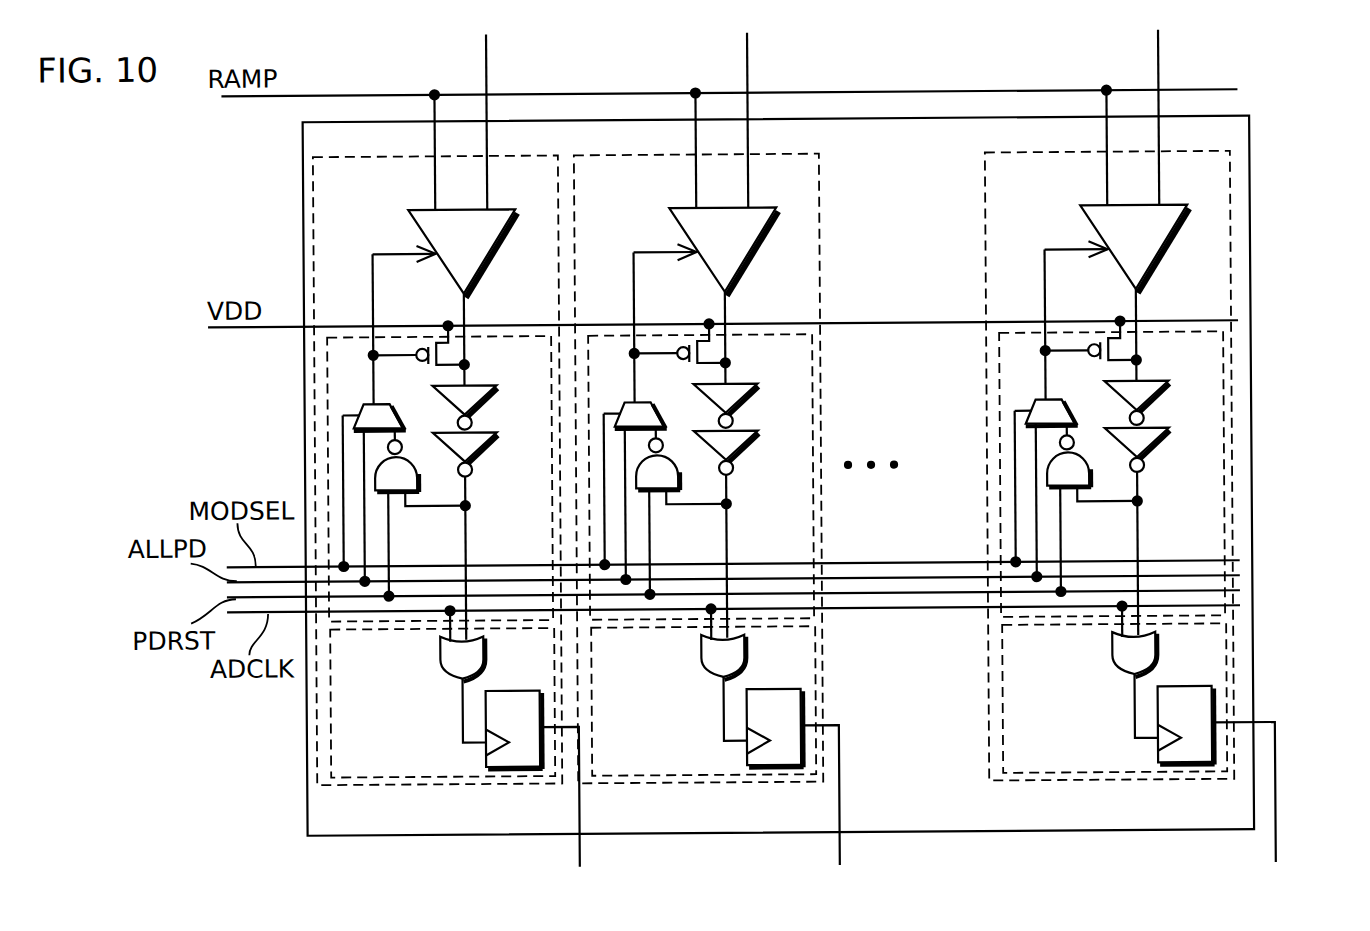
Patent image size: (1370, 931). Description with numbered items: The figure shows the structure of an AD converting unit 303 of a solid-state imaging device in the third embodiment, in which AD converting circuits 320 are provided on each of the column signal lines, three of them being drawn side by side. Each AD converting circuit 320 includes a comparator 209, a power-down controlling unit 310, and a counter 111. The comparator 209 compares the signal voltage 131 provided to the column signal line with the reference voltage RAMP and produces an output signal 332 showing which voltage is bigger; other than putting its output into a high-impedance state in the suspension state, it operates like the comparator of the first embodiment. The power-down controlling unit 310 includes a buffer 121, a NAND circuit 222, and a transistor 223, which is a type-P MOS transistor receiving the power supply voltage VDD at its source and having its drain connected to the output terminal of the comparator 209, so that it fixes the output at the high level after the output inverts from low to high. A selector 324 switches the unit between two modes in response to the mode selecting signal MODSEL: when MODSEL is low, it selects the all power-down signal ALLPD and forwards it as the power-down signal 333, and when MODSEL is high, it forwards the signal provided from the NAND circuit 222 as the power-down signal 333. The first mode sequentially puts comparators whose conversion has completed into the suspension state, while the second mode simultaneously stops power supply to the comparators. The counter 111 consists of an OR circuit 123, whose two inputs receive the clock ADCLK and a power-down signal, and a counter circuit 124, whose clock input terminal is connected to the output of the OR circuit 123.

The signal voltage 131 is at (1199, 117).
The AD converting circuit 320 is at (1064, 462).
The AD converting unit 303 is at (1255, 206).
The comparator 209 is at (1200, 249).
The power-down signal 333 is at (1081, 320).
The output signal 332 is at (1166, 328).
The transistor 223 is at (1186, 345).
The buffer 121 is at (1216, 423).
The power-down controlling unit 310 is at (1166, 474).
The selector 324 is at (1001, 397).
The NAND circuit 222 is at (1006, 455).
The OR circuit 123 is at (1116, 675).
The counter circuit 124 is at (1186, 699).
The counter 111 is at (1171, 698).